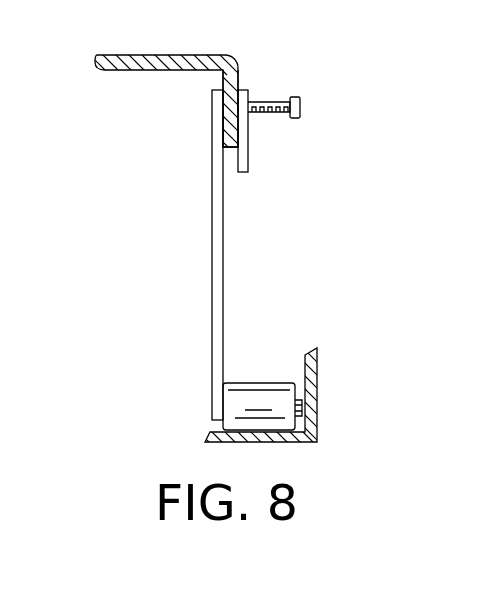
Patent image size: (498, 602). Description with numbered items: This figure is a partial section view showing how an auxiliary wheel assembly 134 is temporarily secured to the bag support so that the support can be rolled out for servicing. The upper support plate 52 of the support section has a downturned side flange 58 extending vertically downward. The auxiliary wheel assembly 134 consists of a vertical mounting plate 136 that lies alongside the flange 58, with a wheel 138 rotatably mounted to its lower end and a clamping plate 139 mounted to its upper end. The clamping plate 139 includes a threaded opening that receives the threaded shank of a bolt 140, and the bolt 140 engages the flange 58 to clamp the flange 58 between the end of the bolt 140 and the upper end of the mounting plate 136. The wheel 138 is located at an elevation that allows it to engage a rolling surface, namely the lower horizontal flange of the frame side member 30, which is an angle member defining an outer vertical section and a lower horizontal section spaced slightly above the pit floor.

The side member 30 is at (315, 390).
The upper support plate 52 is at (162, 57).
The downturned side flange 58 is at (238, 76).
The auxiliary wheel assembly 134 is at (313, 250).
The mounting plate 136 is at (223, 305).
The wheel 138 is at (275, 383).
The clamping plate 139 is at (248, 147).
The bolt 140 is at (300, 107).